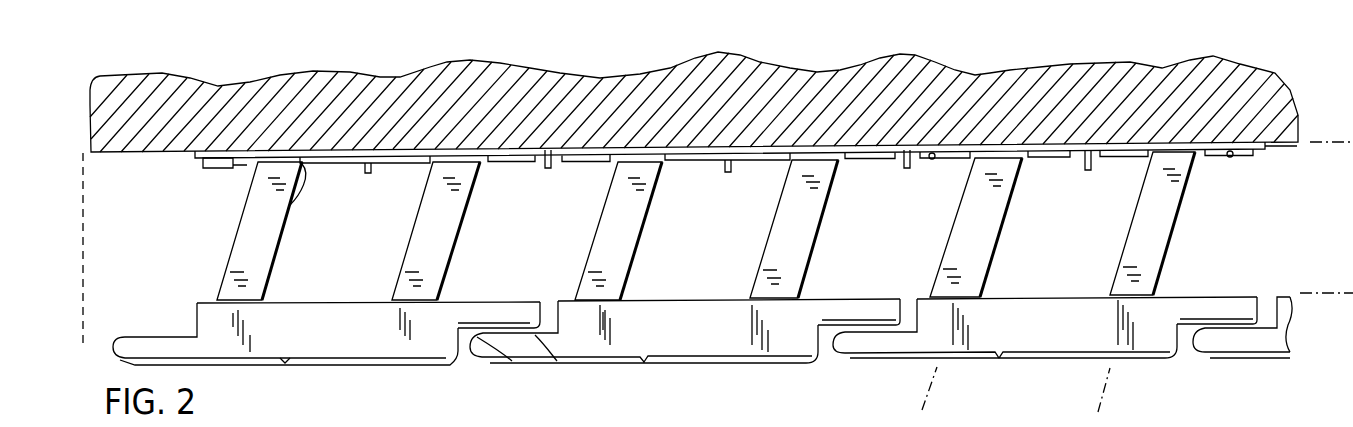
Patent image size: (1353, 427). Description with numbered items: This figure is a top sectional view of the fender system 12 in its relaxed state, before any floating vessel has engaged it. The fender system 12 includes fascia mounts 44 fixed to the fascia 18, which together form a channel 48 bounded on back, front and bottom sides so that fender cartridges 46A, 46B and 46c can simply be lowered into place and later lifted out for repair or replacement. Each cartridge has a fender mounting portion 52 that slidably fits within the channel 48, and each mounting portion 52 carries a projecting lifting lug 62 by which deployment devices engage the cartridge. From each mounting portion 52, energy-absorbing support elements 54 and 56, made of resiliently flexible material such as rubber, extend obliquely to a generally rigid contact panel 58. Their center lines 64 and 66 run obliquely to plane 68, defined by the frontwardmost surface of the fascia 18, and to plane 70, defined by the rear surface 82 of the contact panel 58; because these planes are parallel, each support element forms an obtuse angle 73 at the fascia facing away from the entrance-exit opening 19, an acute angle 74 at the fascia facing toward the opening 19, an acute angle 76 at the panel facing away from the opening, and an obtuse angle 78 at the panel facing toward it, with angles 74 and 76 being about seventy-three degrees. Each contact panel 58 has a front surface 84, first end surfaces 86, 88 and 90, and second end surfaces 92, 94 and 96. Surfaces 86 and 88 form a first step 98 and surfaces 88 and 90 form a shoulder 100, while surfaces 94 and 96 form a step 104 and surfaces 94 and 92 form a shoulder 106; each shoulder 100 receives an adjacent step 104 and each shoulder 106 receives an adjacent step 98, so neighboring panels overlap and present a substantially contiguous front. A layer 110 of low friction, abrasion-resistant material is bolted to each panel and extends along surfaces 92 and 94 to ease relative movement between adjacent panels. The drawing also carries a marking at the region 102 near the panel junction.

The fender system 12 is at (226, 66).
The fascia 18 is at (990, 77).
The entrance-exit opening 19 is at (83, 250).
The fascia mount 44 is at (913, 160).
The fender cartridge 46A is at (1160, 366).
The fender cartridge 46B is at (731, 370).
The fender cartridge 46c is at (395, 370).
The channel 48 is at (930, 163).
The fender mounting portion 52 is at (291, 203).
The energy-absorbing support element 54 is at (458, 232).
The energy-absorbing support element 56 is at (285, 228).
The contact panel 58 is at (347, 295).
The lifting lug 62 is at (366, 176).
The center line 64 is at (1105, 385).
The center line 66 is at (922, 393).
The plane 68 is at (1348, 148).
The plane 70 is at (1338, 290).
The obtuse angle 73 is at (505, 175).
The acute angle 74 is at (418, 192).
The acute angle 76 is at (647, 291).
The obtuse angle 78 is at (564, 295).
The rear surface 82 is at (320, 300).
The front surface 84 is at (337, 368).
The first end surface 86 is at (478, 355).
The first end surface 88 is at (535, 335).
The first end surface 90 is at (578, 336).
The second end surface 92 is at (461, 352).
The second end surface 94 is at (468, 322).
The second end surface 96 is at (548, 307).
The first step 98 is at (485, 338).
The shoulder 100 is at (548, 328).
The shoulder 102 is at (603, 321).
The step 104 is at (518, 322).
The shoulder 106 is at (400, 330).
The layer of low friction material 110 is at (962, 362).